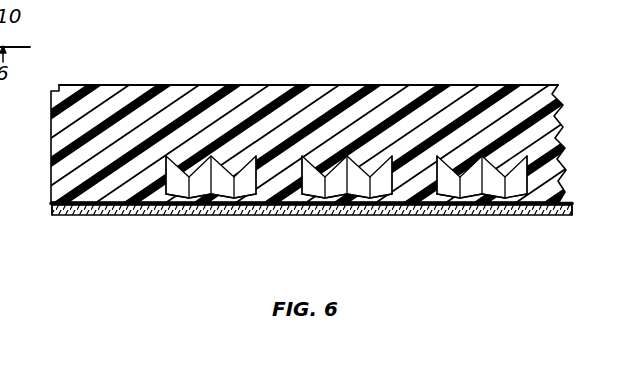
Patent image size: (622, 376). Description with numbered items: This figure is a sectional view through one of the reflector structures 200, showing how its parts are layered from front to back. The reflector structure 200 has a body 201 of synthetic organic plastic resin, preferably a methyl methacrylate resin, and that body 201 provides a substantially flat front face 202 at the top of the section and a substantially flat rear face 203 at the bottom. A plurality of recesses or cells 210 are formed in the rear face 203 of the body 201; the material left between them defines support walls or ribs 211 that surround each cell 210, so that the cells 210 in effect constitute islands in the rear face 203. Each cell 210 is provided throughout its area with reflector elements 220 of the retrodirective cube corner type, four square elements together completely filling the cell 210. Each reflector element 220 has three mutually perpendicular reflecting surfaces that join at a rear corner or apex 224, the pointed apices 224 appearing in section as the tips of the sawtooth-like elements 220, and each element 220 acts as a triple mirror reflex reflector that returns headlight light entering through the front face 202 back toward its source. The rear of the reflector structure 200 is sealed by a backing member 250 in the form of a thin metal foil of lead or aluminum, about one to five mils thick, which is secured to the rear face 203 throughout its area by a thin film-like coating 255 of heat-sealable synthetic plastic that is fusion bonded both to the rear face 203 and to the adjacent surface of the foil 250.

The reflector structure 200 is at (113, 82).
The body 201 is at (182, 100).
The front face 202 is at (266, 84).
The rear face 203 is at (82, 214).
The recess or cell 210 is at (557, 174).
The support wall or rib 211 is at (276, 208).
The reflector element 220 is at (330, 153).
The rear corner or apex 224 is at (195, 215).
The backing member 250 is at (537, 210).
The coating 255 is at (53, 205).